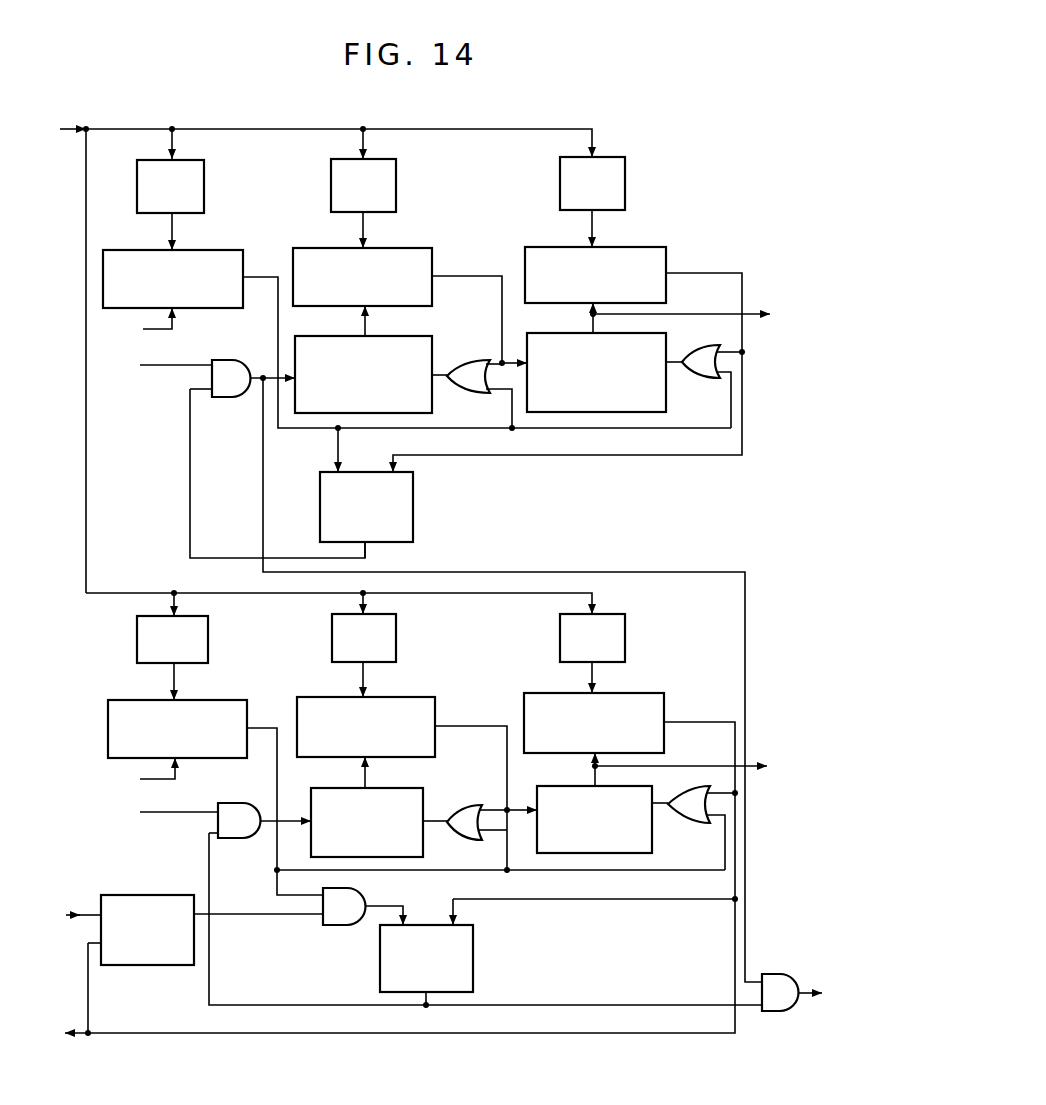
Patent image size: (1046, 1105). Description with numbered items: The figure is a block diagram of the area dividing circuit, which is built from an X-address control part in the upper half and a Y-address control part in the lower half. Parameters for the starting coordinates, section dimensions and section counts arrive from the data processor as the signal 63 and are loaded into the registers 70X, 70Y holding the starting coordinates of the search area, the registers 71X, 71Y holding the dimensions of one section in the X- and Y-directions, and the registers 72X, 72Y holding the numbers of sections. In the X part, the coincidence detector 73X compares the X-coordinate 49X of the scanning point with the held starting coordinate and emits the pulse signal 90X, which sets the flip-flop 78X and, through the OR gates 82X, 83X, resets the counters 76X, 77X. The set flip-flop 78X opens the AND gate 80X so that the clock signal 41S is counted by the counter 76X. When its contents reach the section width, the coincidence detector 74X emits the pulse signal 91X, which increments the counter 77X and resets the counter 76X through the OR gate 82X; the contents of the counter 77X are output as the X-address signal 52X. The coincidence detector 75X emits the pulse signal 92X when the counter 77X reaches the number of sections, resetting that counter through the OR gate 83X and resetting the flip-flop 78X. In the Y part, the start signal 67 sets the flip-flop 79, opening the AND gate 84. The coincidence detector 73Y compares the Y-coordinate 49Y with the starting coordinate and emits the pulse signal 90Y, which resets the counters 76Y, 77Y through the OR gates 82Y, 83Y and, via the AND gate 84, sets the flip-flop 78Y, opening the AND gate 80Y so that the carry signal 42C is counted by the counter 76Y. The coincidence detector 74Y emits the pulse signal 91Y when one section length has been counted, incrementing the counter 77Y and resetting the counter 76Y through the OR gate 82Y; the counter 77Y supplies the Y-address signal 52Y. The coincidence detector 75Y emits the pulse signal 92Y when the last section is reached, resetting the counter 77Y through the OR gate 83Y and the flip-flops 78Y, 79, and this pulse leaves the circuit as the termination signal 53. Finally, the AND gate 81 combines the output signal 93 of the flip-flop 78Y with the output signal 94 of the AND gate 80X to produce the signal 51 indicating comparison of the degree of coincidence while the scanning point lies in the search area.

The signal 63 is at (52, 134).
The register 70X is at (204, 183).
The register 71X is at (396, 178).
The register 72X is at (625, 178).
The register 70Y is at (208, 639).
The register 71Y is at (396, 637).
The register 72Y is at (625, 637).
The coincidence detector 73X is at (243, 258).
The coincidence detector 74X is at (432, 256).
The coincidence detector 75X is at (666, 256).
The coincidence detector 73Y is at (245, 705).
The coincidence detector 74Y is at (435, 708).
The coincidence detector 75Y is at (664, 704).
The X-coordinate signal 49X is at (131, 325).
The Y-coordinate signal 49Y is at (131, 775).
The clock signal 41S is at (151, 369).
The carry signal 42C is at (153, 815).
The AND gate 80X is at (218, 350).
The AND gate 80Y is at (250, 839).
The AND gate 84 is at (345, 925).
The AND gate 81 is at (778, 974).
The pulse signal 90X is at (475, 354).
The pulse signal 90Y is at (473, 811).
The counter 76X is at (432, 352).
The counter 77X is at (666, 340).
The counter 76Y is at (423, 797).
The counter 77Y is at (526, 798).
The OR gate 82X is at (462, 393).
The OR gate 83X is at (700, 378).
The OR gate 82Y is at (465, 840).
The OR gate 83Y is at (690, 823).
The pulse signal 91X is at (462, 288).
The pulse signal 92X is at (677, 280).
The pulse signal 91Y is at (460, 735).
The pulse signal 92Y is at (687, 731).
The X-address signal 52X is at (702, 315).
The Y-address signal 52Y is at (704, 767).
The flip-flop 78X is at (413, 490).
The flip-flop 78Y is at (473, 943).
The flip-flop 79 is at (125, 881).
The output signal 94 is at (263, 488).
The output signal 93 is at (596, 1005).
The start signal 67 is at (74, 900).
The termination signal 53 is at (58, 1044).
The comparison signal 51 is at (808, 996).